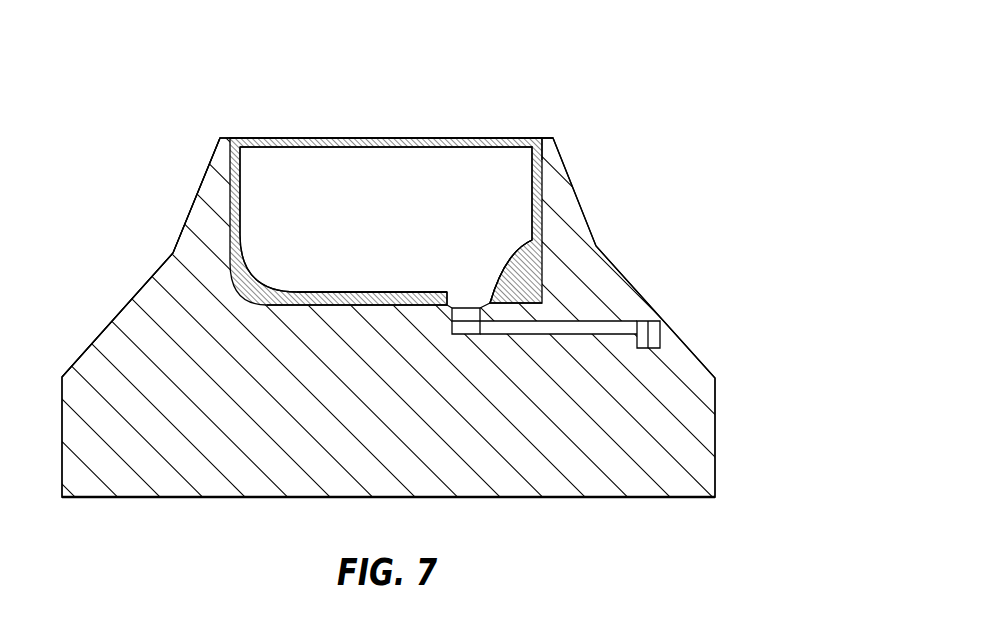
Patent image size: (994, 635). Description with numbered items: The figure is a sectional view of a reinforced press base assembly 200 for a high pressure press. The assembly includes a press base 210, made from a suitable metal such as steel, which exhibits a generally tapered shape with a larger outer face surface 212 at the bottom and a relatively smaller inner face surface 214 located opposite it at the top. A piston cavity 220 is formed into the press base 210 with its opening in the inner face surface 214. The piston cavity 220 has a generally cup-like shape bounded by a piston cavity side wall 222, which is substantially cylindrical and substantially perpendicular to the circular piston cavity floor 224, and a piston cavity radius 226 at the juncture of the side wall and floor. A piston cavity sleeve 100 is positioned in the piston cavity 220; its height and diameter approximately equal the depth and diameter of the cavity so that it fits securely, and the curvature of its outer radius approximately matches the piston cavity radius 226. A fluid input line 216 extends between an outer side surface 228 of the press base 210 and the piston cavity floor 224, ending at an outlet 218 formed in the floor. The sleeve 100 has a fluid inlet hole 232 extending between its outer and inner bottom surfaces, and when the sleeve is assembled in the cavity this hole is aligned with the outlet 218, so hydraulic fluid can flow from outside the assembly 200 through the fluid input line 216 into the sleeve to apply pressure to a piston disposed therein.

The piston cavity sleeve 100 is at (537, 138).
The reinforced press base assembly 200 is at (641, 137).
The press base 210 is at (607, 267).
The outer face surface 212 is at (498, 507).
The inner face surface 214 is at (225, 130).
The fluid input line 216 is at (607, 322).
The outlet 218 is at (463, 308).
The piston cavity 220 is at (223, 233).
The piston cavity side wall 222 is at (230, 190).
The piston cavity floor 224 is at (312, 303).
The piston cavity radius 226 is at (540, 297).
The outer side surface 228 is at (685, 350).
The fluid inlet hole 232 is at (445, 285).